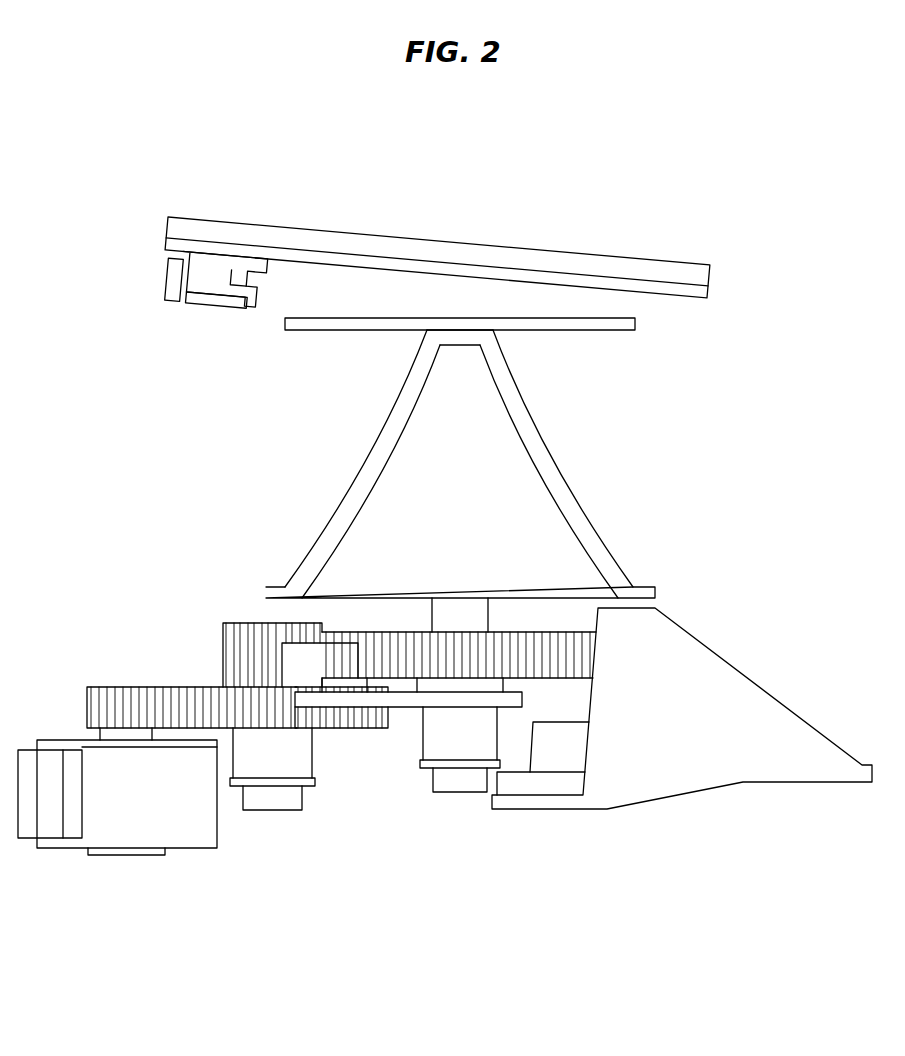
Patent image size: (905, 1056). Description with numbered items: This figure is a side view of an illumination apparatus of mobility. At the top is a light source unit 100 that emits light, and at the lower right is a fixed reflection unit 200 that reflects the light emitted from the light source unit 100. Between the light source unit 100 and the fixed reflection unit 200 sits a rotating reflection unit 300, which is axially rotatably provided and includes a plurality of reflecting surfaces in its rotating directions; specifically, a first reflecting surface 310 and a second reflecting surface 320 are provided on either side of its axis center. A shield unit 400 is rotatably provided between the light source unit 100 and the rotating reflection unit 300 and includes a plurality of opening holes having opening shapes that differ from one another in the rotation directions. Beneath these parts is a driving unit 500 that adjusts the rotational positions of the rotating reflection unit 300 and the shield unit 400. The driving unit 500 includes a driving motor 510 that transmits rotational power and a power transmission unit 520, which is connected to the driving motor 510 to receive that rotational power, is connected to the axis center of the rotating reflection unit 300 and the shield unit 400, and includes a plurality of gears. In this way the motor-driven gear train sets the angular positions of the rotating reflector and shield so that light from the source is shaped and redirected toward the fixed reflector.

The light source unit 100 is at (445, 230).
The fixed reflection unit 200 is at (760, 674).
The rotating reflection unit 300 is at (484, 481).
The first reflecting surface 310 is at (583, 508).
The second reflecting surface 320 is at (363, 472).
The shield unit 400 is at (275, 327).
The driving unit 500 is at (307, 824).
The driving motor 510 is at (123, 861).
The power transmission unit 520 is at (343, 728).